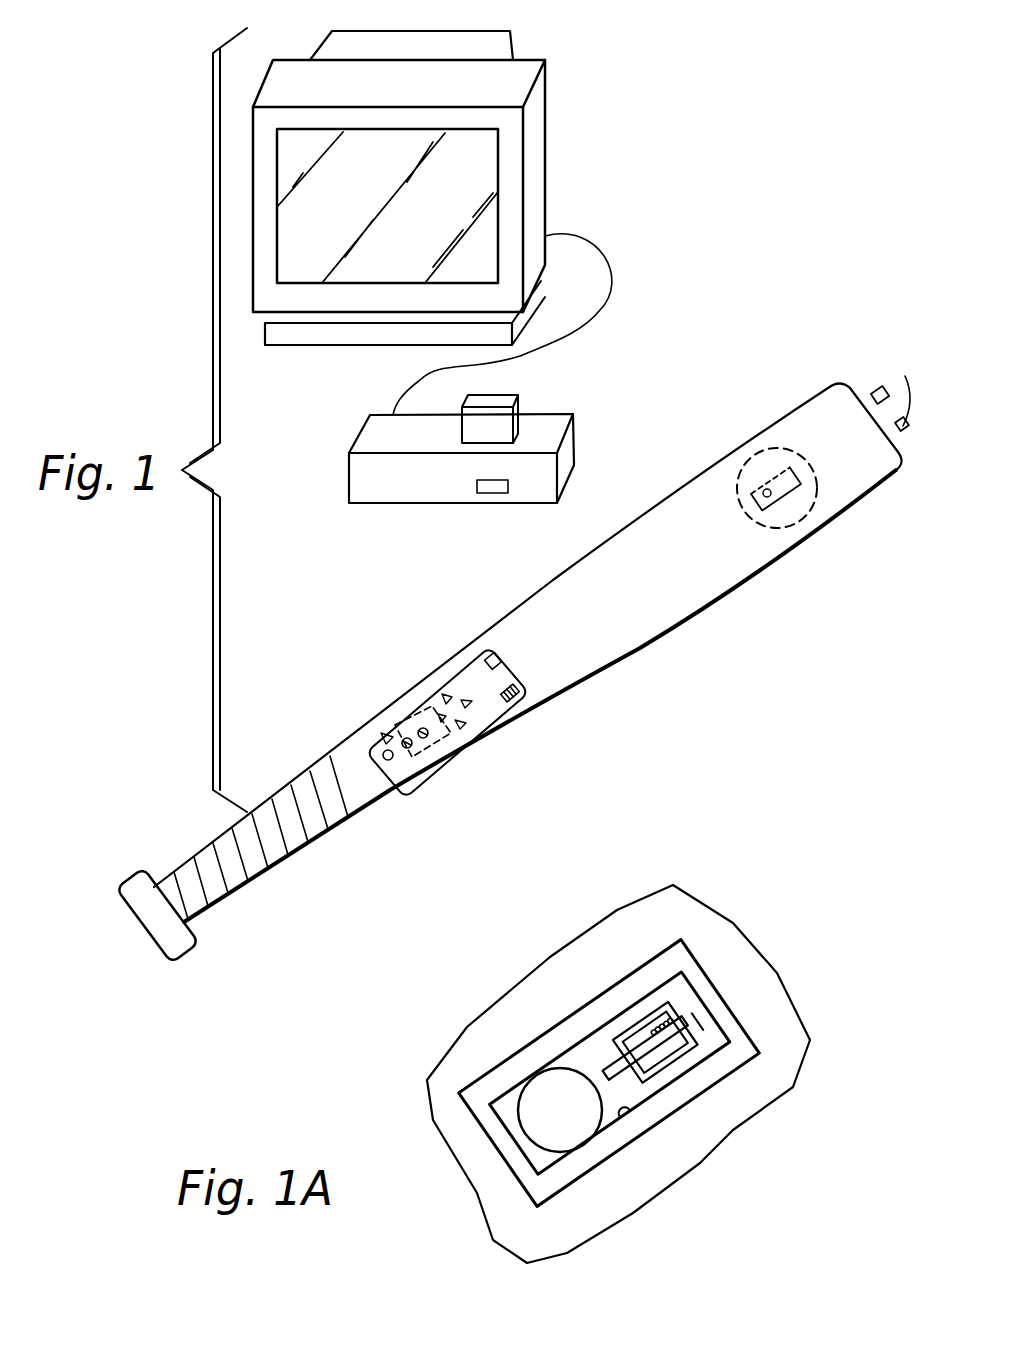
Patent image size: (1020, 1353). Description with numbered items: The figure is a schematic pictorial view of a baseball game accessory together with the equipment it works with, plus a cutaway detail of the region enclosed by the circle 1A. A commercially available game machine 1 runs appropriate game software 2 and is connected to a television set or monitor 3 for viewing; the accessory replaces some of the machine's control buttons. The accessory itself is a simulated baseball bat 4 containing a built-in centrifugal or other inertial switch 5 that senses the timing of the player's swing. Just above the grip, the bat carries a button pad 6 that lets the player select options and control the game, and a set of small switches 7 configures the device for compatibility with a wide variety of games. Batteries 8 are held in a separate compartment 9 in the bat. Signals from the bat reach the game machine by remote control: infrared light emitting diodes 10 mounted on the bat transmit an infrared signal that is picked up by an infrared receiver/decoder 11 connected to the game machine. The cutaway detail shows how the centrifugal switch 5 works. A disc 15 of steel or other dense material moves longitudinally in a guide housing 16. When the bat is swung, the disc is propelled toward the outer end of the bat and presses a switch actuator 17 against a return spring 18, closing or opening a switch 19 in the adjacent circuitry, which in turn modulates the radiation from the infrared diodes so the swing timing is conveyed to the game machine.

In FIG. 1, the game machine 1 is at (592, 440).
In FIG. 1, the game software 2 is at (522, 415).
In FIG. 1, the television set or monitor 3 is at (510, 80).
In FIG. 1, the simulated baseball bat 4 is at (728, 607).
In FIG. 1, the centrifugal switch 5 is at (790, 494).
In FIG. 1A, the centrifugal switch 5 is at (467, 1143).
In FIG. 1, the button pad 6 is at (462, 672).
In FIG. 1, the small switches 7 is at (513, 697).
In FIG. 1, the batteries 8 is at (407, 723).
In FIG. 1, the compartment 9 is at (380, 740).
In FIG. 1, the infrared light emitting diodes 10 is at (883, 390).
In FIG. 1, the infrared receiver/decoder 11 is at (480, 491).
In FIG. 1, the circle 1A is at (817, 497).
In FIG. 1A, the disc 15 is at (578, 1126).
In FIG. 1A, the guide housing 16 is at (630, 1112).
In FIG. 1A, the switch actuator 17 is at (605, 1062).
In FIG. 1A, the return spring 18 is at (667, 1043).
In FIG. 1A, the switch 19 is at (693, 1027).